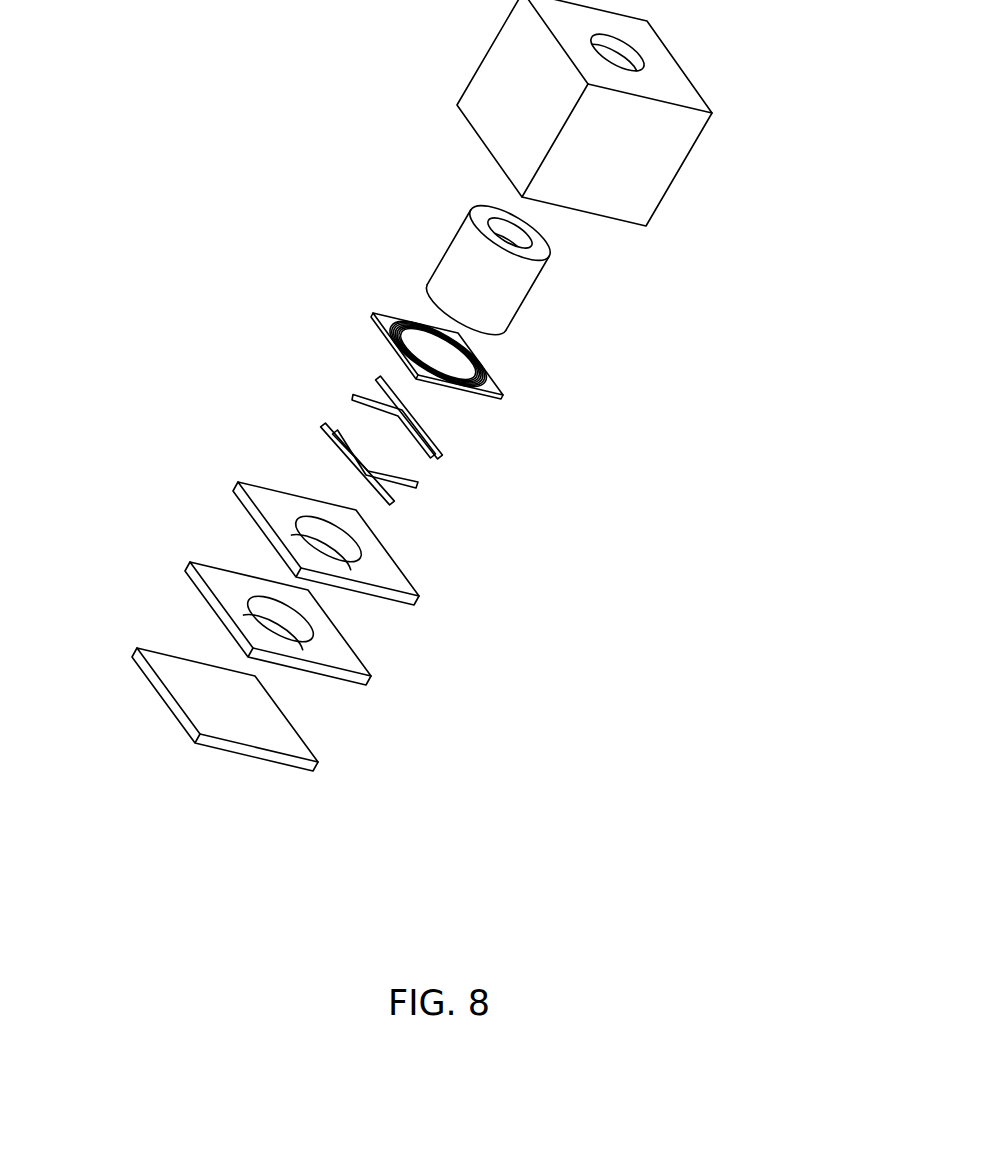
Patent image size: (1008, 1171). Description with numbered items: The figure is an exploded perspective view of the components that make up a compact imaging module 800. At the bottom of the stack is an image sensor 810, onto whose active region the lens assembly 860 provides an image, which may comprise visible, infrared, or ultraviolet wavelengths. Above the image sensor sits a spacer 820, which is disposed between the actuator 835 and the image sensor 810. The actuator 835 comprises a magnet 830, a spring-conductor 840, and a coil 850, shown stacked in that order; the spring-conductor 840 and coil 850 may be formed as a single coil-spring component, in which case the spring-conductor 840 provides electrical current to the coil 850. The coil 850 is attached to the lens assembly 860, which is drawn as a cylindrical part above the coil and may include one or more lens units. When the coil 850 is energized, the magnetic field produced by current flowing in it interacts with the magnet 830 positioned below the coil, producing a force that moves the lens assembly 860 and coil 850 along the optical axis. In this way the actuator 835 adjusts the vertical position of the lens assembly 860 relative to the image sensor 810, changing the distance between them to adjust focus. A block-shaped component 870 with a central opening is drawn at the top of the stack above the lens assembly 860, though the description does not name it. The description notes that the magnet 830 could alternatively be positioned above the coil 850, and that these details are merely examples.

The compact imaging module 800 is at (177, 25).
The image sensor 810 is at (157, 682).
The spacer 820 is at (192, 575).
The magnet 830 is at (390, 570).
The actuator 835 is at (350, 253).
The spring-conductor 840 is at (447, 457).
The coil 850 is at (370, 315).
The lens assembly 860 is at (533, 290).
The housing block 870 is at (700, 92).